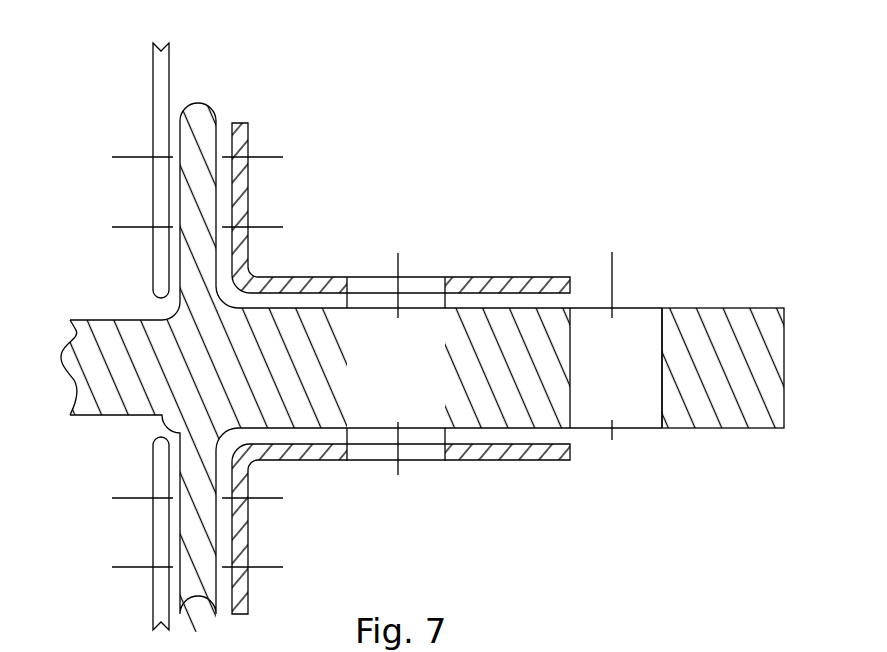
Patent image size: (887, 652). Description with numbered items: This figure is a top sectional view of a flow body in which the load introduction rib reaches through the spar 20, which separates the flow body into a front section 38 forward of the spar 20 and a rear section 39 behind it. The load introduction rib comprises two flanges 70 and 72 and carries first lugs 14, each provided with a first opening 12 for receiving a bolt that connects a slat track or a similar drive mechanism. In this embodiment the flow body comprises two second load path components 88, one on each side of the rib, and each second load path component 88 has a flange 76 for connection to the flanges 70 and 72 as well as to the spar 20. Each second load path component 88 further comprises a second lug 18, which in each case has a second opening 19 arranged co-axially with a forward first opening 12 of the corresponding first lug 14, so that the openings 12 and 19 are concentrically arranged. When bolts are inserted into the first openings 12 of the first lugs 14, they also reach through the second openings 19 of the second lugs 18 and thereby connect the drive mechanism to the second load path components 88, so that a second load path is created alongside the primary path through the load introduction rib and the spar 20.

The first opening 12 is at (433, 337).
The first lug 14 is at (710, 327).
The second lug 18 is at (537, 277).
The second opening 19 is at (407, 277).
The spar 20 is at (162, 72).
The front section 38 is at (125, 86).
The rear section 39 is at (607, 121).
The flange 70 is at (193, 518).
The flange 72 is at (200, 132).
The flange 76 is at (248, 141).
The second load path component 88 is at (293, 278).